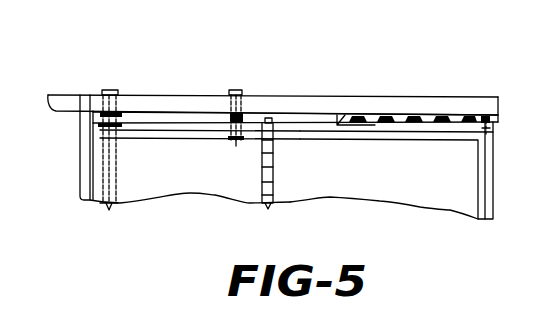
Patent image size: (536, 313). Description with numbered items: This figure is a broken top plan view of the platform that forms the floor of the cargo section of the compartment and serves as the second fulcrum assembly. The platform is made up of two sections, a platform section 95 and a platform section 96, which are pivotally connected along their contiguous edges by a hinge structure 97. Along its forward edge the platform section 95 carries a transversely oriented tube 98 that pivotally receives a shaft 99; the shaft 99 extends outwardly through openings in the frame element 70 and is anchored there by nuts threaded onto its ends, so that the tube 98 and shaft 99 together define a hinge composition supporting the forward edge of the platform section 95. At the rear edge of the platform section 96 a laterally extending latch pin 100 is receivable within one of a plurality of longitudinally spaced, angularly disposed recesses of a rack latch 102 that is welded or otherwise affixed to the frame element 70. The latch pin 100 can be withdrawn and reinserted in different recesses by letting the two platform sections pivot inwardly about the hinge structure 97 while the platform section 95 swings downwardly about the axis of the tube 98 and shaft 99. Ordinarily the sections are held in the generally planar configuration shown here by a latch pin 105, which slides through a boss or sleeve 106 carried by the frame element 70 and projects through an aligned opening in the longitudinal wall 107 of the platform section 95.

The frame element 70 is at (327, 100).
The platform section 95 is at (187, 183).
The platform section 96 is at (404, 194).
The hinge structure 97 is at (273, 182).
The tube 98 is at (118, 182).
The shaft 99 is at (112, 92).
The latch pin 100 is at (486, 121).
The rack latch 102 is at (429, 118).
The latch pin 105 is at (238, 89).
The boss or sleeve 106 is at (246, 115).
The longitudinal wall 107 is at (188, 128).